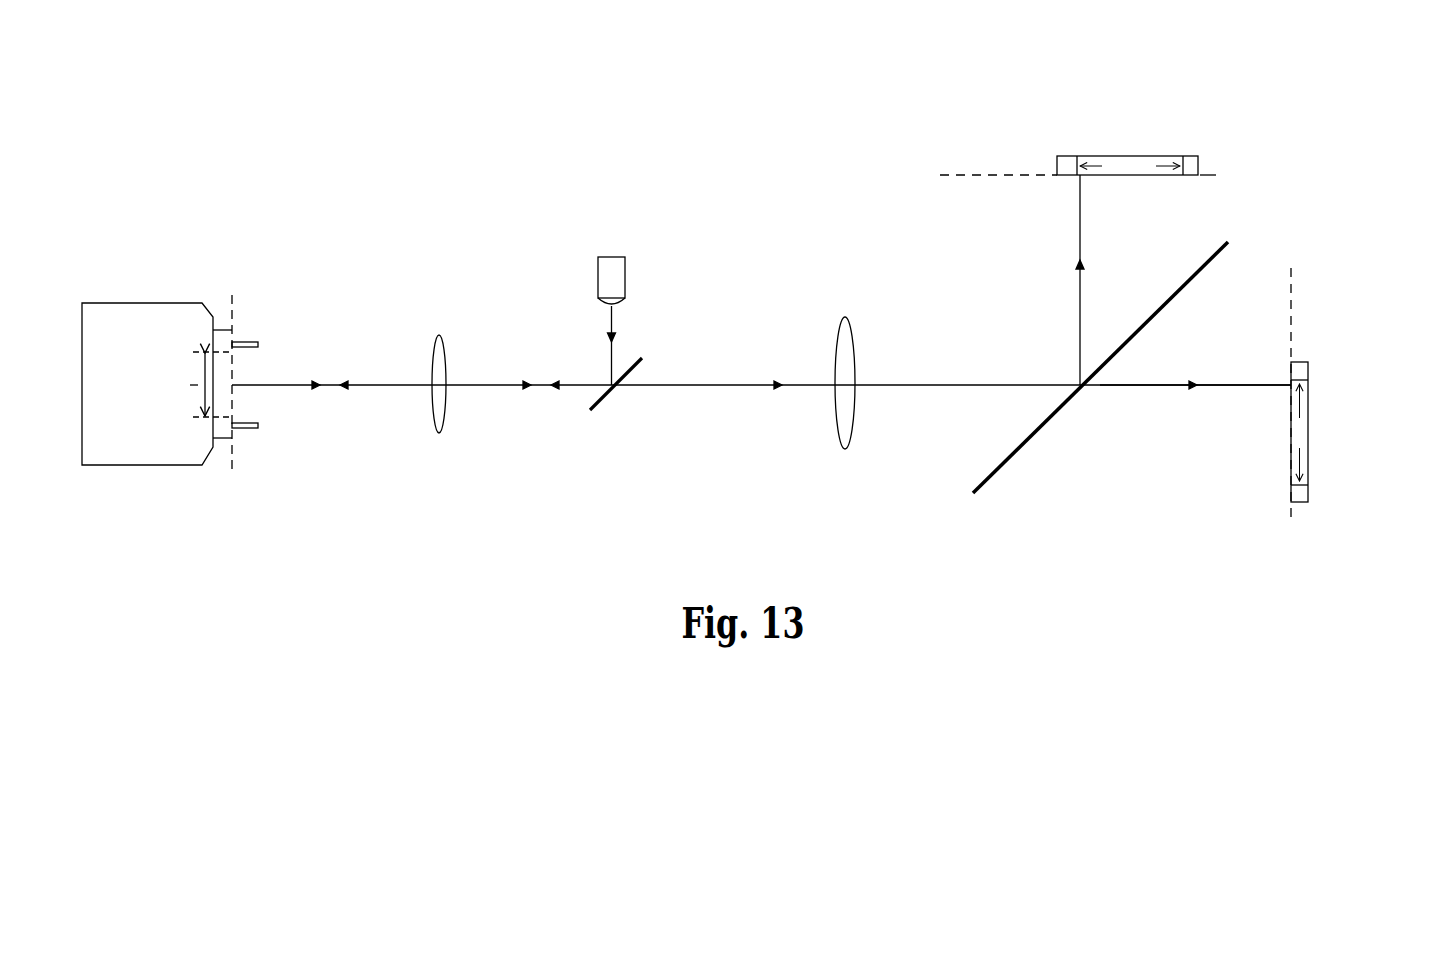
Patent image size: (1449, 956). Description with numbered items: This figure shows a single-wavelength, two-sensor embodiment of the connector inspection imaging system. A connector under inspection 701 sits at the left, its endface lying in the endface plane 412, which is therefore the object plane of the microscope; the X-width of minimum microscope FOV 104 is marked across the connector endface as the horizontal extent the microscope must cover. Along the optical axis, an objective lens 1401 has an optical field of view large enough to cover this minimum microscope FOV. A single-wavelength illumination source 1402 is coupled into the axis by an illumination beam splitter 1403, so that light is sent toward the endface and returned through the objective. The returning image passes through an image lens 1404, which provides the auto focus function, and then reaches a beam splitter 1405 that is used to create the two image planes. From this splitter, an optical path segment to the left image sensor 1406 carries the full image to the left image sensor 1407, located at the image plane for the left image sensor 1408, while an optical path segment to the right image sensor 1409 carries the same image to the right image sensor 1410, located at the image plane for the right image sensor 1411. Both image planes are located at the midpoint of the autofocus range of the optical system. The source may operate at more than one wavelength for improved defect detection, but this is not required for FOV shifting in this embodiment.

The connector under inspection 701 is at (160, 301).
The X-width of minimum microscope FOV 104 is at (203, 386).
The endface plane 412 is at (233, 483).
The objective lens 1401 is at (437, 331).
The single-wavelength illumination source 1402 is at (613, 252).
The illumination beam splitter 1403 is at (617, 398).
The image lens 1404 is at (845, 457).
The beam splitter 1405 is at (993, 487).
The optical path segment to left image sensor 1406 is at (1188, 424).
The left image sensor 1407 is at (978, 280).
The image plane for left image sensor 1408 is at (1318, 433).
The optical path segment to right image sensor 1409 is at (1289, 533).
The right image sensor 1410 is at (1135, 152).
The image plane for right image sensor 1411 is at (940, 175).